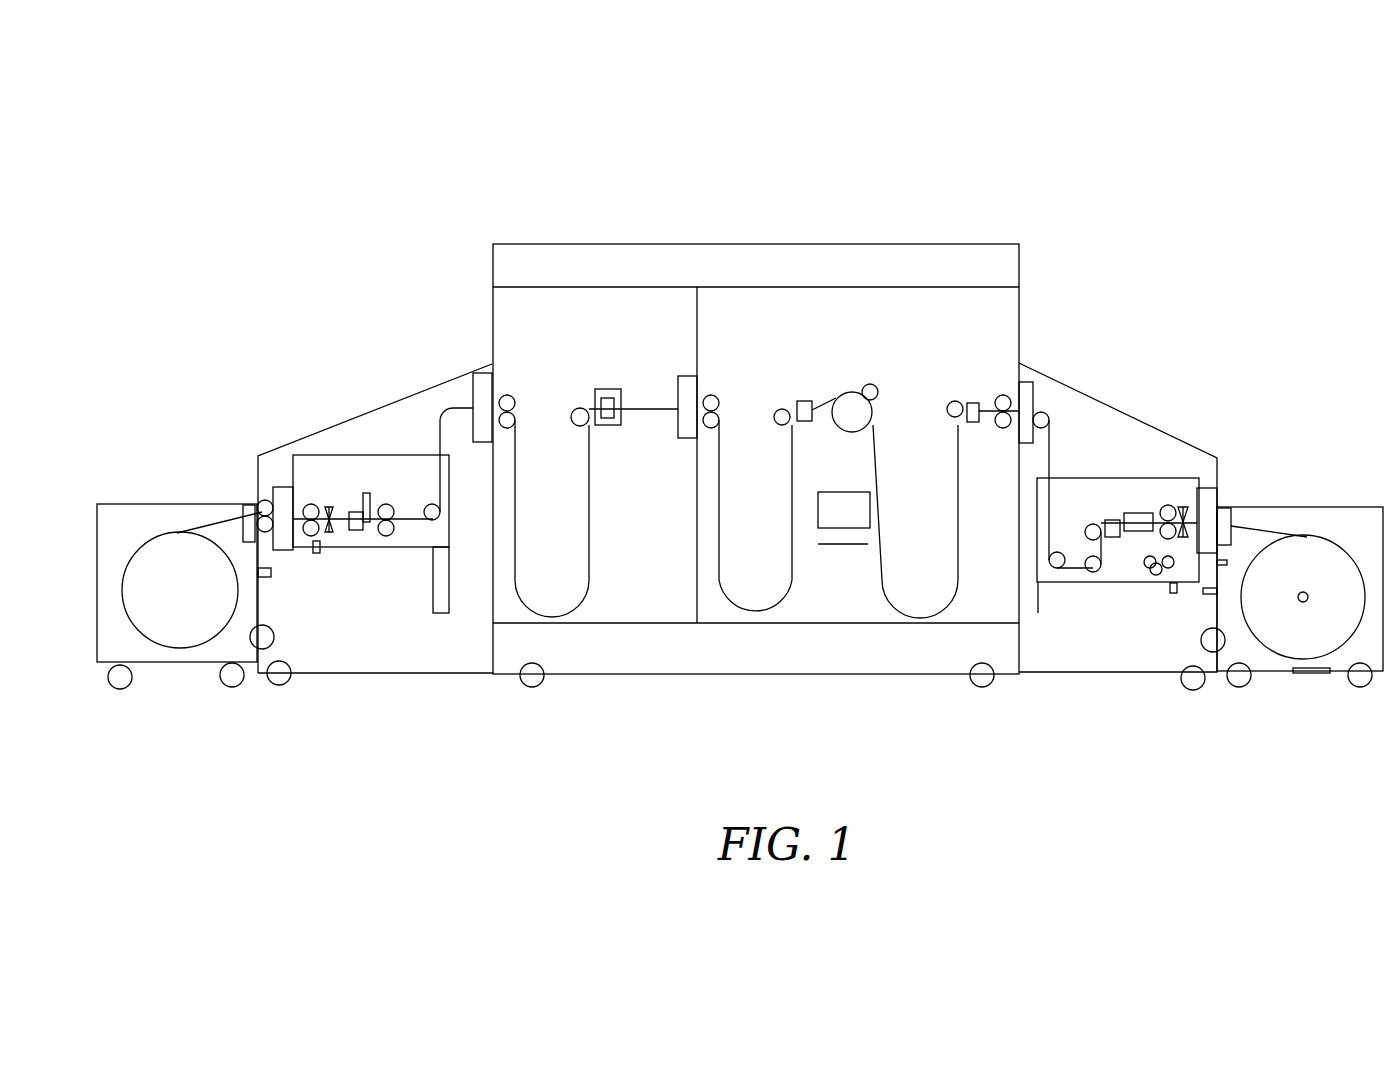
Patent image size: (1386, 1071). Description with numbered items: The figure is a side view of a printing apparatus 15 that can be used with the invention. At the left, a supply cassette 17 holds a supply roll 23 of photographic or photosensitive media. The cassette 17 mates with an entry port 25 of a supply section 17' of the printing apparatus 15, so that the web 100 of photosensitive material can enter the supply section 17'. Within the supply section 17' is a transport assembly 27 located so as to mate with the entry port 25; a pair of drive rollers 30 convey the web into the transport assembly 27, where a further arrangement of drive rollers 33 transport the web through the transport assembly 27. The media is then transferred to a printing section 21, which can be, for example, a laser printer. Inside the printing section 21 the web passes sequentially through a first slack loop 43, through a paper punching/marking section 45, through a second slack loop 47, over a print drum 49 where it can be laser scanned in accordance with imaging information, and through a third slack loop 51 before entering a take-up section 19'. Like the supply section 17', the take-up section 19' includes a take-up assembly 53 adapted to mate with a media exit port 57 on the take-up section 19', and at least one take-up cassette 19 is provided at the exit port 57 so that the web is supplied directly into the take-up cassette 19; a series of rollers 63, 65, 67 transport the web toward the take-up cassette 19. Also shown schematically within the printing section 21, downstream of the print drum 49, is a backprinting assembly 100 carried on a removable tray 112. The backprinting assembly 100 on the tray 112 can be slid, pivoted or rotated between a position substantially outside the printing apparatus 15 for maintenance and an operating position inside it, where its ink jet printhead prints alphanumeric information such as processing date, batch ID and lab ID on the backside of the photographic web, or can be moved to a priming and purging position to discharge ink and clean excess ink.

The printing apparatus 15 is at (920, 240).
The supply cassette 17 is at (169, 552).
The supply section 17' is at (371, 544).
The take-up cassette 19 is at (1300, 567).
The take-up section 19' is at (1122, 545).
The printing section 21 is at (632, 243).
The supply roll 23 is at (192, 627).
The entry port 25 is at (243, 503).
The transport assembly 27 is at (402, 465).
The drive rollers 30 is at (265, 500).
The drive rollers 33 is at (386, 504).
The first slack loop 43 is at (562, 615).
The paper punching/marking section 45 is at (615, 389).
The second slack loop 47 is at (763, 617).
The print drum 49 is at (848, 392).
The third slack loop 51 is at (913, 615).
The take-up assembly 53 is at (1165, 477).
The media exit port 57 is at (1222, 520).
The roller 63 is at (1049, 416).
The roller 65 is at (1063, 553).
The roller 67 is at (1092, 585).
The backprinting assembly 100 is at (837, 497).
The removable tray 112 is at (853, 545).